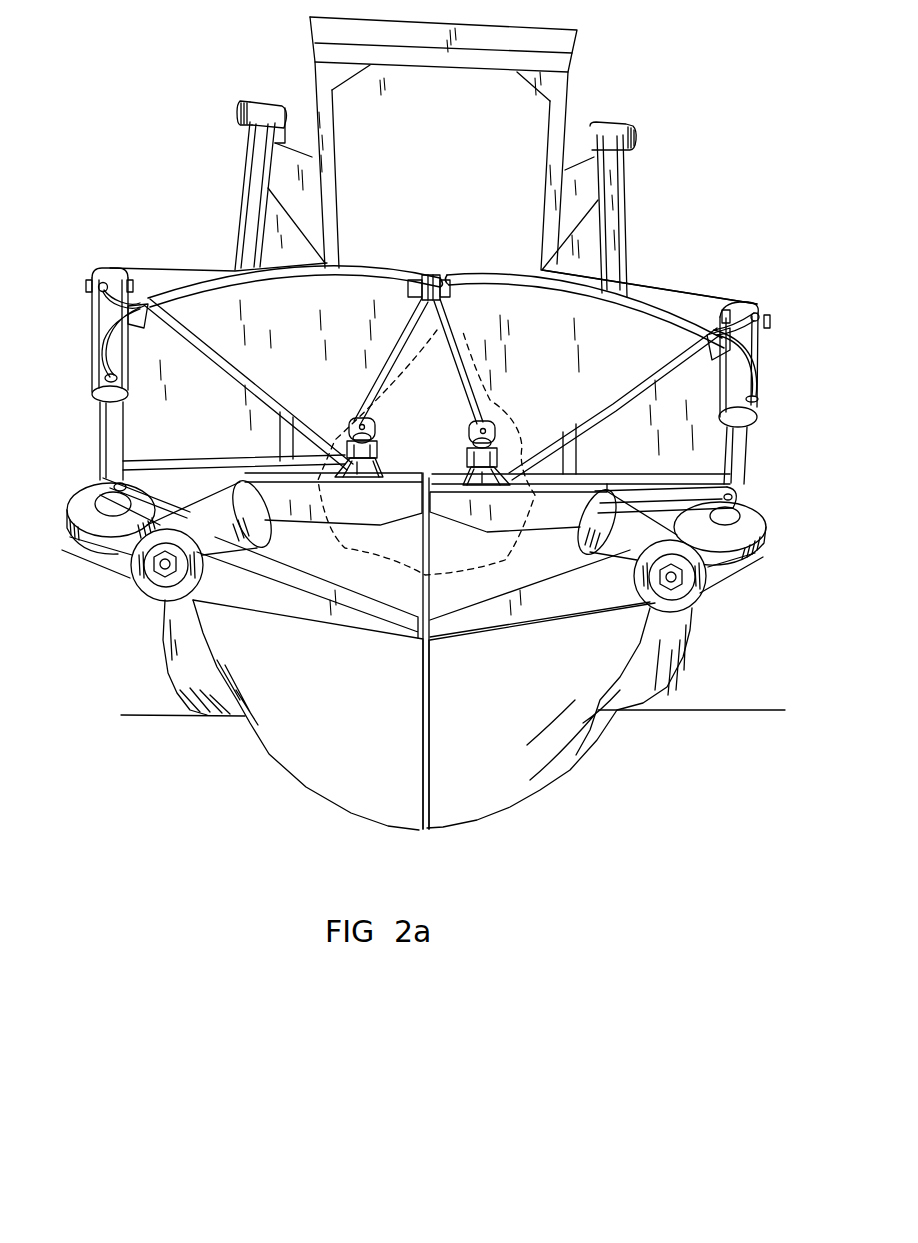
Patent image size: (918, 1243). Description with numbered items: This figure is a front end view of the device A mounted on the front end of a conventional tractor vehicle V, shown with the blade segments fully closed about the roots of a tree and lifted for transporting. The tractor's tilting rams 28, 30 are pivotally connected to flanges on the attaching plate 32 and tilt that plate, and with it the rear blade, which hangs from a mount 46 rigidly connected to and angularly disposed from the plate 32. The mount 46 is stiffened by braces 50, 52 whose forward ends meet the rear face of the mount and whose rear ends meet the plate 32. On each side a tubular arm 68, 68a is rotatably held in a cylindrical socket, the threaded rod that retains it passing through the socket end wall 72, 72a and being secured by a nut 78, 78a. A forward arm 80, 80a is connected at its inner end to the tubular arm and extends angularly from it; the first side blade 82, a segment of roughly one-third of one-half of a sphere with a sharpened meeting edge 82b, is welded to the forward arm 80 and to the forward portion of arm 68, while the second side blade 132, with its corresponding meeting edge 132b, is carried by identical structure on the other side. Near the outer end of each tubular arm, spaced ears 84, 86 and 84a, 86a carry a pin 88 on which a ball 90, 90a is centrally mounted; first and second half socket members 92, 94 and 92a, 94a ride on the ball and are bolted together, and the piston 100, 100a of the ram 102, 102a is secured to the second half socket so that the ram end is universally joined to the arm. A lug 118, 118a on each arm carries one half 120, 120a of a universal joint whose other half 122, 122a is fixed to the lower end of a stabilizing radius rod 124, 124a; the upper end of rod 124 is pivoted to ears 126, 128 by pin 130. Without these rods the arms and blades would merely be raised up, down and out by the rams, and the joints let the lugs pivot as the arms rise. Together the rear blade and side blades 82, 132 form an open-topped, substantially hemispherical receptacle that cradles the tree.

The tilting ram 28 is at (250, 191).
The tilting ram 30 is at (613, 272).
The attaching plate 32 is at (686, 305).
The mount 46 is at (213, 333).
The brace 50 is at (280, 447).
The brace 52 is at (577, 450).
The tubular arm 68 is at (245, 533).
The tubular arm 68a is at (610, 537).
The end wall 72 is at (196, 578).
The end wall 72a is at (697, 596).
The nut 78 is at (163, 571).
The nut 78a is at (663, 590).
The forward arm 80 is at (318, 617).
The forward arm 80a is at (543, 612).
The first blade segment 82 is at (319, 778).
The meeting edge 82b is at (421, 726).
The ear 84 is at (103, 485).
The ear 84a is at (678, 510).
The ear 86 is at (130, 567).
The ear 86a is at (717, 568).
The pin 88 is at (128, 490).
The ball 90 is at (110, 508).
The ball 90a is at (740, 519).
The first one-half socket member 92 is at (97, 538).
The first one-half socket member 92a is at (768, 537).
The second one-half socket member 94 is at (92, 495).
The second one-half socket member 94a is at (745, 507).
The piston 100 is at (108, 435).
The piston 100a is at (752, 447).
The ram 102 is at (98, 330).
The ram 102a is at (758, 350).
The lug 118 is at (368, 509).
The lug 118a is at (478, 515).
The universal joint half 120 is at (377, 441).
The universal joint half 120a is at (470, 462).
The universal joint half 122 is at (374, 423).
The universal joint half 122a is at (497, 438).
The stabilizing radius rod 124 is at (405, 347).
The stabilizing radius rod 124a is at (473, 397).
The ear 126 is at (410, 293).
The ear 128 is at (446, 301).
The pin 130 is at (450, 290).
The second blade segment 132 is at (540, 787).
The right wing inner edge 132b is at (430, 730).
The device A is at (723, 620).
The tractor vehicle V is at (630, 210).